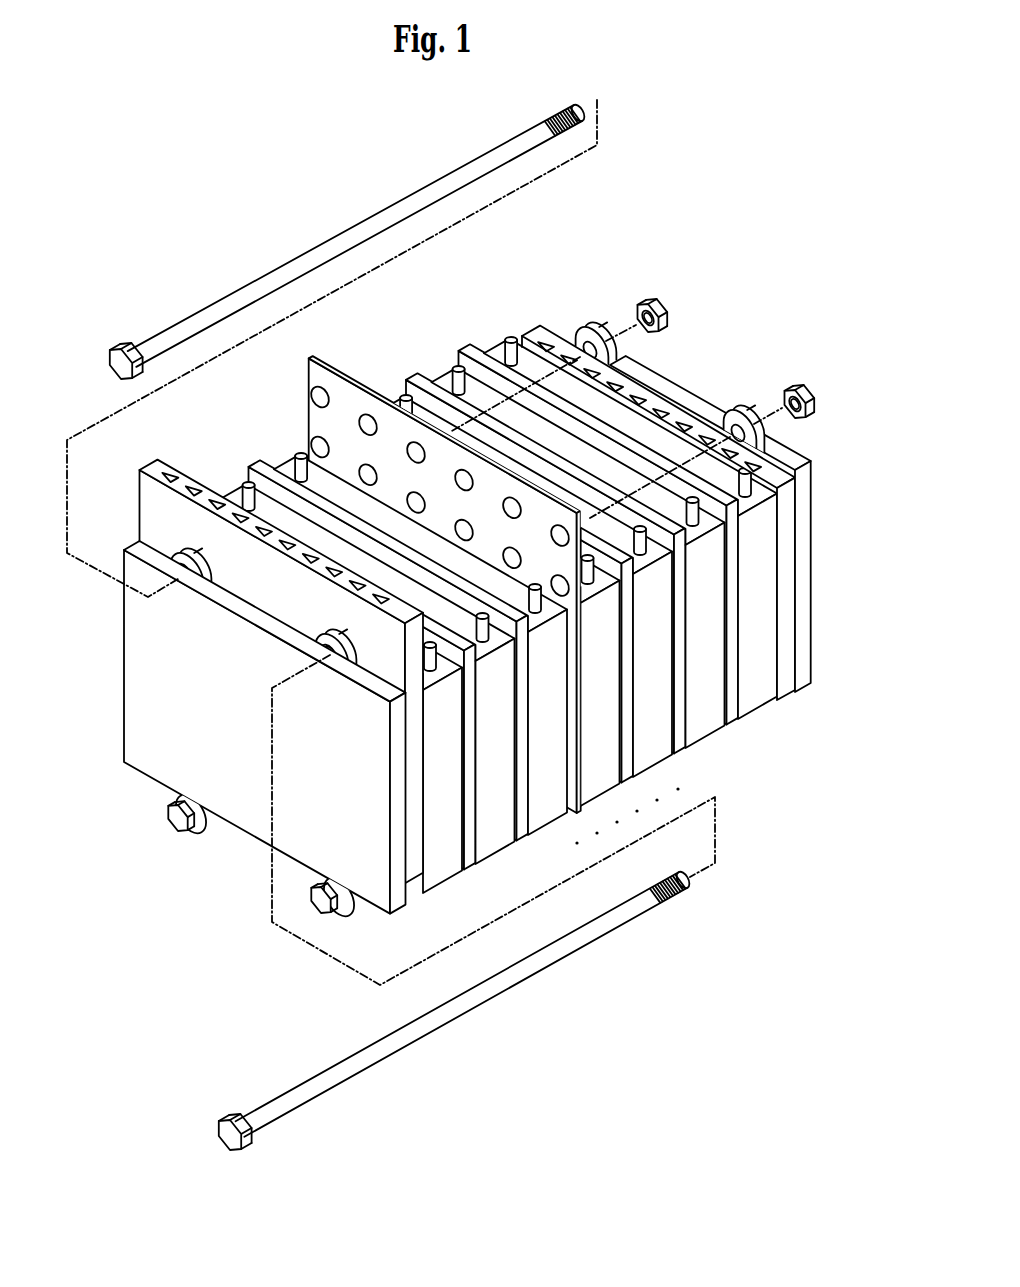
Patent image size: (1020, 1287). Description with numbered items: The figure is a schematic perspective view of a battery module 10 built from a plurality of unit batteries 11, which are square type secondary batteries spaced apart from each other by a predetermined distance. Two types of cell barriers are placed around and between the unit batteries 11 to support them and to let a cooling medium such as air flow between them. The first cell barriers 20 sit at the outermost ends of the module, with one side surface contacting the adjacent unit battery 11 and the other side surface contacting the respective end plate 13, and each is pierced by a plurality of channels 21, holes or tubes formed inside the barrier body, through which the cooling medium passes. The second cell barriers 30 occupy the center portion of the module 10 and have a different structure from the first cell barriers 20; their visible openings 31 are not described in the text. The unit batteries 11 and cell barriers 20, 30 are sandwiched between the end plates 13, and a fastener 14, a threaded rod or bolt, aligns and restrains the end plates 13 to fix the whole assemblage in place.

The battery module 10 is at (441, 98).
The unit batteries 11 is at (443, 882).
The end plates 13 is at (683, 399).
The fastener 14 is at (270, 274).
The first cell barriers 20 is at (442, 585).
The channels 21 is at (566, 350).
The second cell barriers 30 is at (467, 594).
The holes 31 is at (368, 418).